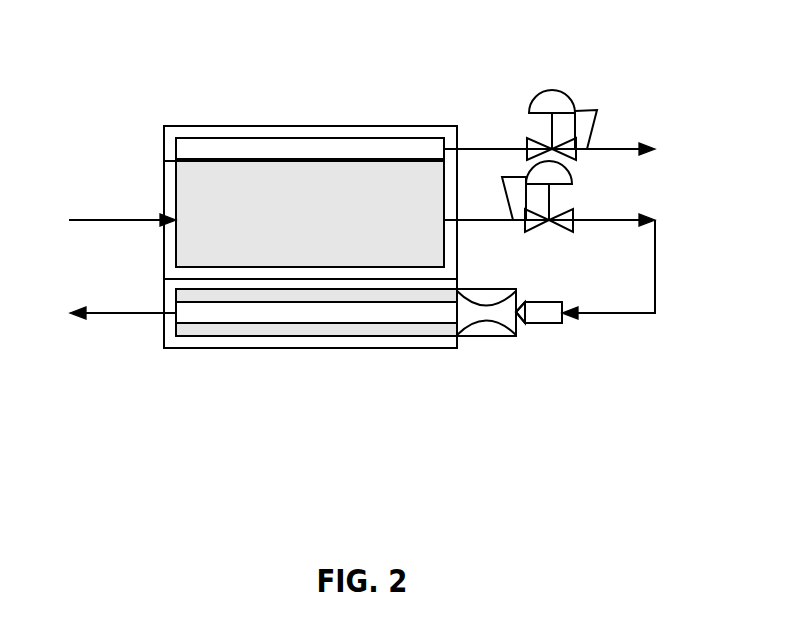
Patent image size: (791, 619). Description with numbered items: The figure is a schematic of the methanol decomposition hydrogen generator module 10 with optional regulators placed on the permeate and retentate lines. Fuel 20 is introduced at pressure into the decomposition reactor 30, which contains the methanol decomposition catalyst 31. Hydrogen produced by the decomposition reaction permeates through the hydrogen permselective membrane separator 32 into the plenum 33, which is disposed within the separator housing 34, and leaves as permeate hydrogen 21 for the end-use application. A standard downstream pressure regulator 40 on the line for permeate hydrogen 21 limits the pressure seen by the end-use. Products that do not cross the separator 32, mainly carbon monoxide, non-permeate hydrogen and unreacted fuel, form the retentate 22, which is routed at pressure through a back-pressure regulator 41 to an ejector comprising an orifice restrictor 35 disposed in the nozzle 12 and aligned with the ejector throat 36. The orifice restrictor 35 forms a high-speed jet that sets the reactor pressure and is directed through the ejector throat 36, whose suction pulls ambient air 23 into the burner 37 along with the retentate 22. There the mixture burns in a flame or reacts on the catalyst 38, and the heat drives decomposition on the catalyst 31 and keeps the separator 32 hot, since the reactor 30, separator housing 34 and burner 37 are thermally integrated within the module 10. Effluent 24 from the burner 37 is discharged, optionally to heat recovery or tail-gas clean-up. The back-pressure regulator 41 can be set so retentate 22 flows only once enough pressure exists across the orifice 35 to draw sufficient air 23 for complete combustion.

The module 10 is at (308, 491).
The nozzle 12 is at (547, 317).
The fuel 20 is at (101, 220).
The permeate hydrogen 21 is at (570, 150).
The retentate 22 is at (570, 263).
The ambient air 23 is at (540, 340).
The effluent 24 is at (101, 313).
The decomposition reactor 30 is at (164, 183).
The methanol decomposition catalyst 31 is at (310, 214).
The hydrogen permselective membrane separator 32 is at (223, 158).
The plenum 33 is at (328, 148).
The separator housing 34 is at (387, 125).
The orifice restrictor 35 is at (538, 305).
The ejector throat 36 is at (482, 337).
The burner 37 is at (352, 347).
The catalyst 38 is at (233, 337).
The downstream pressure regulator 40 is at (563, 92).
The back-pressure regulator 41 is at (562, 197).